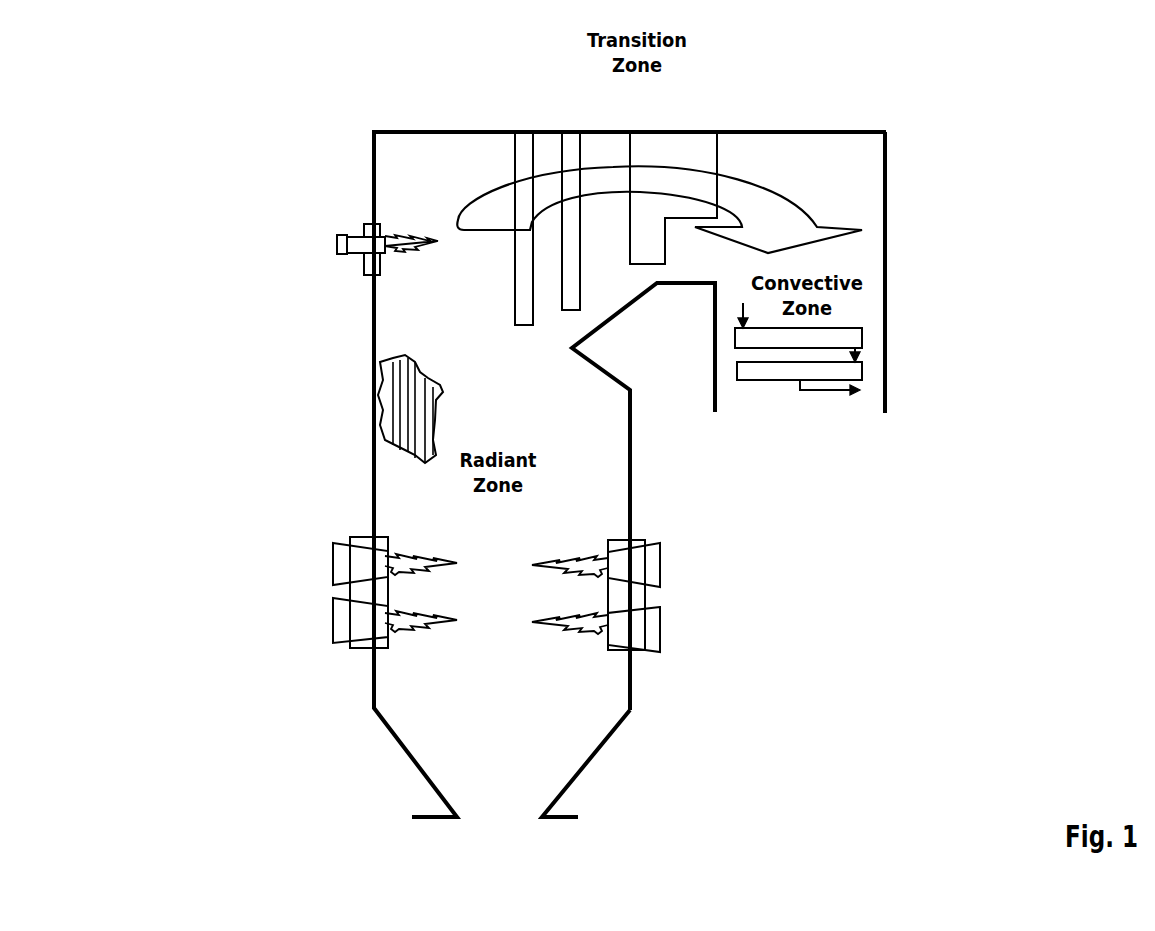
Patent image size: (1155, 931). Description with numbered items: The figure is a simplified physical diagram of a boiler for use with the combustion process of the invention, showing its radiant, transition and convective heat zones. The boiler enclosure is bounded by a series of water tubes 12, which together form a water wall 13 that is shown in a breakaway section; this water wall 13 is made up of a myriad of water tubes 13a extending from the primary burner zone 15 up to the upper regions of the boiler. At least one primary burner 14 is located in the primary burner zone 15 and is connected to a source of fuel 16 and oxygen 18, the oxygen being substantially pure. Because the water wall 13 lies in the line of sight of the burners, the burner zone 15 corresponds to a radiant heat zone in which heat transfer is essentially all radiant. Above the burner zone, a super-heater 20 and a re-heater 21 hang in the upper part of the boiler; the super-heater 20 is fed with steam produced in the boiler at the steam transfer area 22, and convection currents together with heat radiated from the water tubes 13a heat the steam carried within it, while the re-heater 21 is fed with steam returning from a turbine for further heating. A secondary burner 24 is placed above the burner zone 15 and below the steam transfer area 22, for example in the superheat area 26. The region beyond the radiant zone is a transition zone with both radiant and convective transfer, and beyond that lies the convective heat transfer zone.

The water tubes 12 is at (368, 398).
The water wall 13 is at (388, 365).
The water tubes 13a is at (417, 387).
The primary burner 14 is at (337, 545).
The primary burner zone 15 is at (503, 561).
The source of fuel 16 is at (337, 236).
The oxygen 18 is at (698, 608).
The super-heater 20 is at (523, 143).
The re-heater 21 is at (572, 143).
The steam transfer area 22 is at (477, 130).
The secondary burner 24 is at (338, 255).
The superheat area 26 is at (490, 263).